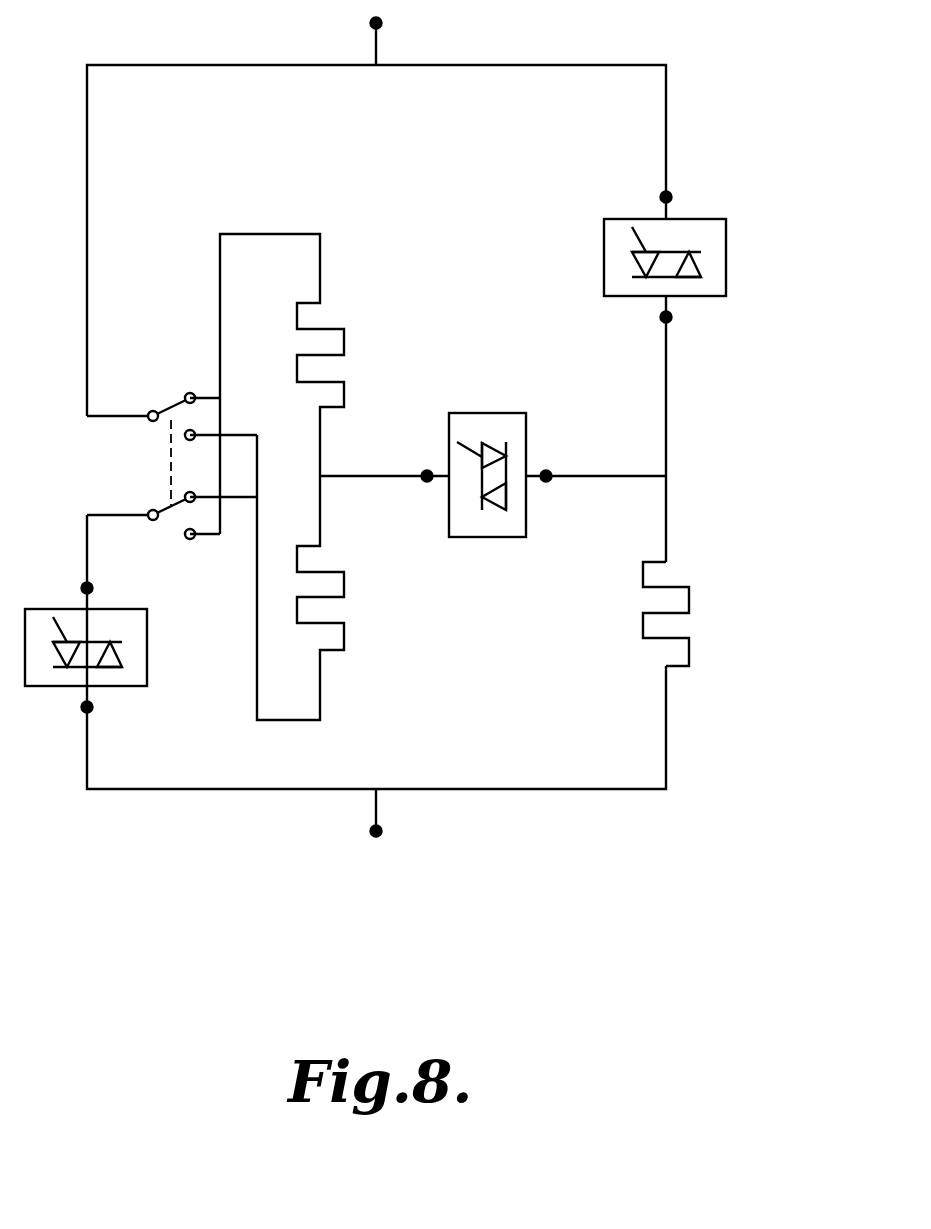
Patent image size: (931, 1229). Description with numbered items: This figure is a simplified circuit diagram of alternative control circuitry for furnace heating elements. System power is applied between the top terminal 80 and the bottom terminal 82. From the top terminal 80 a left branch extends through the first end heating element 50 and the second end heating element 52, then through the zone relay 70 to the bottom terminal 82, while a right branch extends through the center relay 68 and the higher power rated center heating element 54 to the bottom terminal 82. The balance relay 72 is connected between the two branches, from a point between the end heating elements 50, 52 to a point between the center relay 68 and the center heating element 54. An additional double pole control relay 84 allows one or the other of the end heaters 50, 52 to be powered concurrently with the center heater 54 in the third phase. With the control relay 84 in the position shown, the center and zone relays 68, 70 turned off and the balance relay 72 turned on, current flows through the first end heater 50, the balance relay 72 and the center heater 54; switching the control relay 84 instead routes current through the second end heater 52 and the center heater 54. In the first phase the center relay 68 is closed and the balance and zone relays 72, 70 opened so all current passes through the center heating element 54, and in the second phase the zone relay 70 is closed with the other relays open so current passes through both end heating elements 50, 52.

The first end heating element 50 is at (367, 341).
The second end heating element 52 is at (359, 607).
The center heating element 54 is at (706, 611).
The center relay 68 is at (732, 247).
The zone relay 70 is at (153, 636).
The balance relay 72 is at (531, 409).
The top terminal 80 is at (381, 22).
The bottom terminal 82 is at (381, 830).
The control relay 84 is at (156, 446).